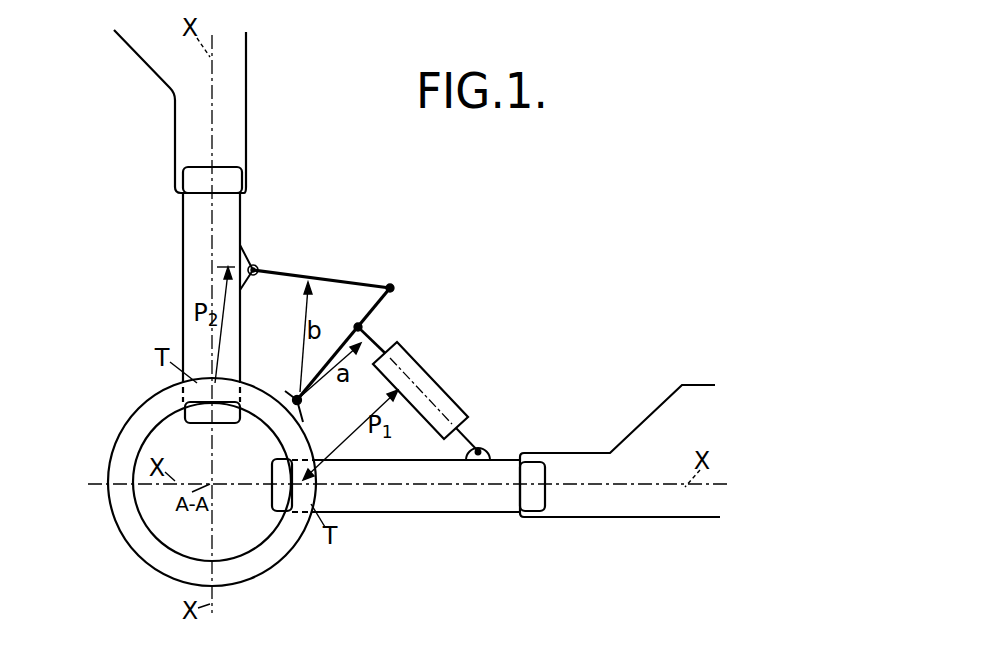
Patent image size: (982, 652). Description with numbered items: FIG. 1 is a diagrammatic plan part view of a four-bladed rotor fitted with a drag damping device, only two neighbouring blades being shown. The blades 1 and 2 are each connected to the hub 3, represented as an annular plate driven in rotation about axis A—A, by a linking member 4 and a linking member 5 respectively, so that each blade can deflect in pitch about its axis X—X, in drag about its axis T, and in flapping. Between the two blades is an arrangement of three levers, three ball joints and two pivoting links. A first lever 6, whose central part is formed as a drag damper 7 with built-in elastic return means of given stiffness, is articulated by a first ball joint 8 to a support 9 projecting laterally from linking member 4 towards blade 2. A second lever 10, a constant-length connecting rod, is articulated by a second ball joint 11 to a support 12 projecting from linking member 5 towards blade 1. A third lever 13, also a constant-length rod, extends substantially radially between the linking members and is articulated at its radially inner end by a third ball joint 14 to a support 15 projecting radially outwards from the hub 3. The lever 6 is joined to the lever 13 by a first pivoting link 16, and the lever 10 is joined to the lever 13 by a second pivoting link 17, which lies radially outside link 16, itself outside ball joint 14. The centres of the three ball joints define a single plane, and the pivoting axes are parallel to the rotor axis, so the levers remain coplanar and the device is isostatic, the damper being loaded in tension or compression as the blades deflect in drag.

The blade 1 is at (597, 508).
The blade 2 is at (225, 73).
The hub 3 is at (132, 522).
The linking member 4 is at (397, 497).
The linking member 5 is at (197, 240).
The first lever 6 is at (466, 430).
The drag damper 7 is at (417, 370).
The first ball joint 8 is at (485, 436).
The support 9 is at (497, 458).
The second lever 10 is at (302, 275).
The second ball joint 11 is at (258, 266).
The support 12 is at (245, 255).
The third lever 13 is at (371, 310).
The third ball joint 14 is at (300, 402).
The support 15 is at (289, 391).
The first pivoting link 16 is at (361, 327).
The second pivoting link 17 is at (393, 286).